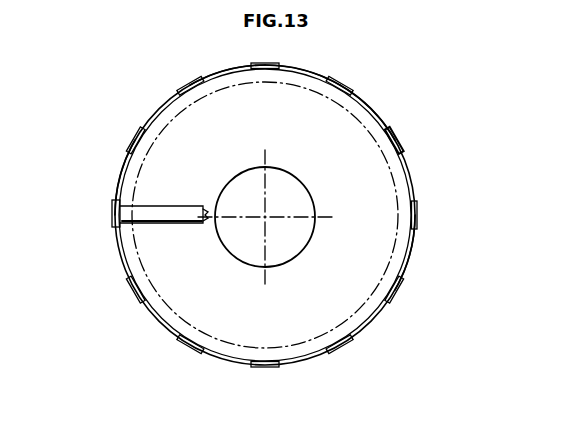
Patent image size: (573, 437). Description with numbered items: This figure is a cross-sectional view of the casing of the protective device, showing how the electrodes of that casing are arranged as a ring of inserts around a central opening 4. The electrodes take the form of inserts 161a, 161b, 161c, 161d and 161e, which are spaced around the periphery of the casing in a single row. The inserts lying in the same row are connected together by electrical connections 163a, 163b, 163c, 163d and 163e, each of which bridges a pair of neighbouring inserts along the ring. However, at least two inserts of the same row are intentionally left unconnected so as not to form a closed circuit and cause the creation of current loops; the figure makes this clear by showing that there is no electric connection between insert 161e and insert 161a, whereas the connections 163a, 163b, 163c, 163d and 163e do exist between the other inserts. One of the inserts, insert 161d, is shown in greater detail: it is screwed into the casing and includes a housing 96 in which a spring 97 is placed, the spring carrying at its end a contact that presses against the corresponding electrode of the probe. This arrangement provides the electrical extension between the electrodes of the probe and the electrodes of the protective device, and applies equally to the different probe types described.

The central bore / shaft opening 4 is at (240, 267).
The housing 96 is at (170, 205).
The spring 97 is at (207, 208).
The insert 161a is at (395, 132).
The insert 161b is at (330, 80).
The insert 161c is at (253, 63).
The insert 161d is at (113, 218).
The insert 161e is at (416, 230).
The electrical connection 163a is at (375, 112).
The electrical connection 163b is at (300, 68).
The electrical connection 163c is at (218, 70).
The electrical connection 163d is at (116, 187).
The electrical connection 163e is at (405, 262).